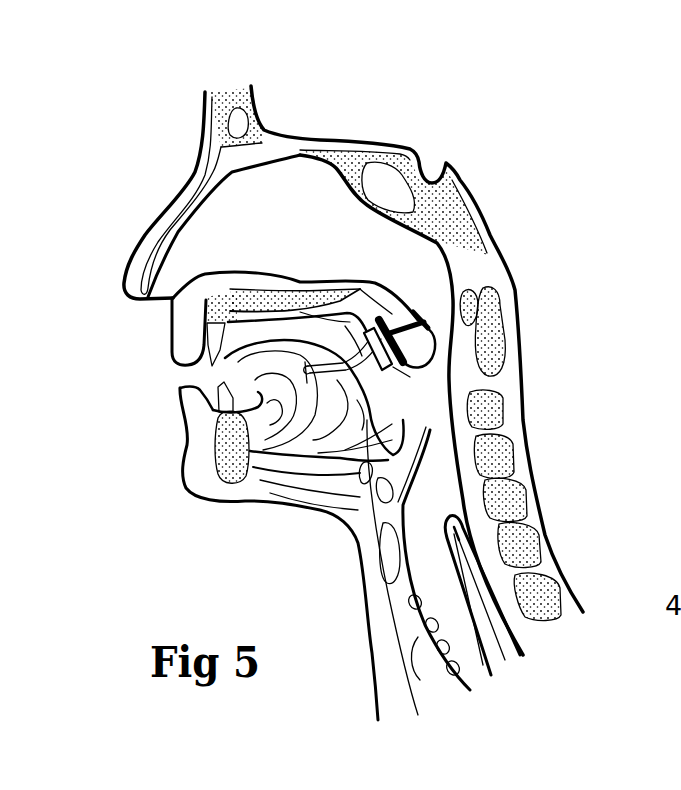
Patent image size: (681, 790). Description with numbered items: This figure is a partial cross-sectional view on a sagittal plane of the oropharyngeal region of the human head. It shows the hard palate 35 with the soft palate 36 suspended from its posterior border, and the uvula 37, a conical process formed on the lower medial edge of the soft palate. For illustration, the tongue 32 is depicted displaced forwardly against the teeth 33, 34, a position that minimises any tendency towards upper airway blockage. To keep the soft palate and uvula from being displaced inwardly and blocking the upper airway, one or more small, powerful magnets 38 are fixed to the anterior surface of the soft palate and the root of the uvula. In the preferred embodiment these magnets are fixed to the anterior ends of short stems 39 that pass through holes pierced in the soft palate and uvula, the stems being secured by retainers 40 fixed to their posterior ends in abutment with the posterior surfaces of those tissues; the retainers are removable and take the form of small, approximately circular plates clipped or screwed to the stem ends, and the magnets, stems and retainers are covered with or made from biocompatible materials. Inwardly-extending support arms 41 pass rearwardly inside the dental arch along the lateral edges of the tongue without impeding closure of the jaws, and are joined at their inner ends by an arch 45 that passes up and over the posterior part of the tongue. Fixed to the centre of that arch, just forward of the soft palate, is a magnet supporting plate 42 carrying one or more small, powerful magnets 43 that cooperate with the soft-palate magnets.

The tongue 32 is at (253, 361).
The teeth 33 is at (210, 340).
The teeth 34 is at (212, 405).
The hard palate 35 is at (286, 300).
The soft palate 36 is at (372, 302).
The uvula 37 is at (421, 347).
The magnets 38 is at (410, 377).
The stems 39 is at (427, 315).
The retainers 40 is at (435, 316).
The support arms 41 is at (338, 377).
The magnet supporting plate 42 is at (323, 325).
The magnets 43 is at (395, 315).
The arch 45 is at (322, 324).